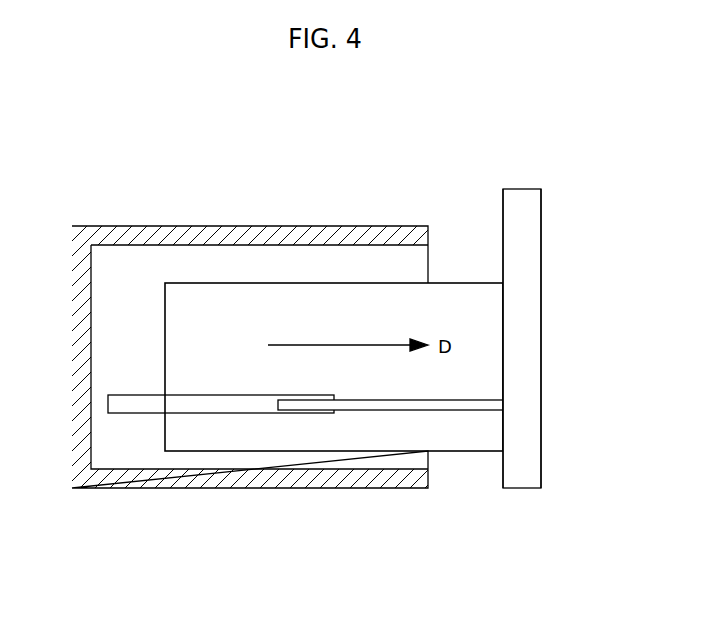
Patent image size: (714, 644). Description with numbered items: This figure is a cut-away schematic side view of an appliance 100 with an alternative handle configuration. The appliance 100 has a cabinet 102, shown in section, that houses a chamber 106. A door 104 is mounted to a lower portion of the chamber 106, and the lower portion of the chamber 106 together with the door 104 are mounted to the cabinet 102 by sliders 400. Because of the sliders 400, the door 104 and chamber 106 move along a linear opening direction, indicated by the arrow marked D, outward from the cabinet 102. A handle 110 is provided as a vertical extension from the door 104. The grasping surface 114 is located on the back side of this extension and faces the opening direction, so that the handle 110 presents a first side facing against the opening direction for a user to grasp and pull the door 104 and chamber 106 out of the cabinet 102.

The appliance 100 is at (183, 138).
The cabinet 102 is at (117, 236).
The door 104 is at (530, 353).
The chamber 106 is at (483, 435).
The handle 110 is at (541, 205).
The grasping surface 114 is at (503, 205).
The sliders 400 is at (418, 413).